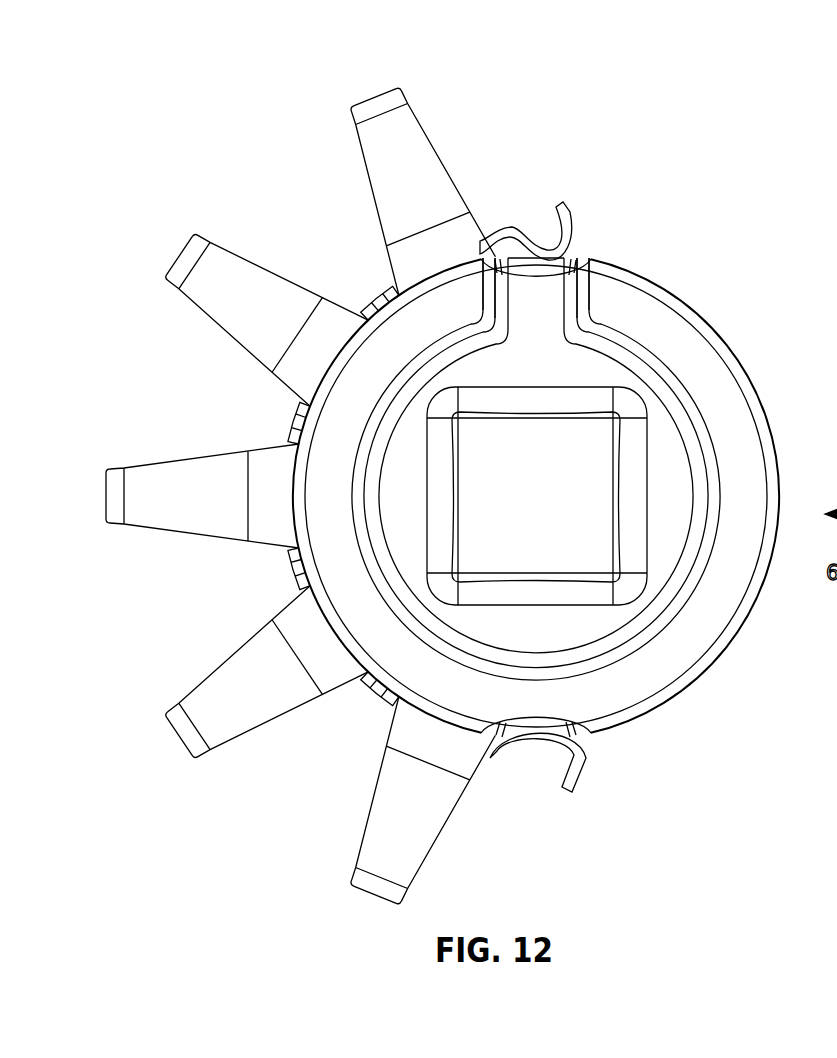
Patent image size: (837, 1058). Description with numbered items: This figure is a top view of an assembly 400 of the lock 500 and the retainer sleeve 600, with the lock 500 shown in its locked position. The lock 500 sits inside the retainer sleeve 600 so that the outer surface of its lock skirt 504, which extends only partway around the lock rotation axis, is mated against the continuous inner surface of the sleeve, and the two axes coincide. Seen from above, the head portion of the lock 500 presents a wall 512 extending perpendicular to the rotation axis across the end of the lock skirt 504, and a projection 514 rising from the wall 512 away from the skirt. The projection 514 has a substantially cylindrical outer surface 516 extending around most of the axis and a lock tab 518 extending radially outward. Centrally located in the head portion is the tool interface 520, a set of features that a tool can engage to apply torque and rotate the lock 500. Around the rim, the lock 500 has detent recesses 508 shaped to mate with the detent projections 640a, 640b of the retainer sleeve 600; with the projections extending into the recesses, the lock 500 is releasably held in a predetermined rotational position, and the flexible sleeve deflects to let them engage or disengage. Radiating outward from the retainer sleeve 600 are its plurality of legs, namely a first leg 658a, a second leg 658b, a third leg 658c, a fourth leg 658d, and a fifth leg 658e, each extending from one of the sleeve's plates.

The surgical access assembly 400 is at (252, 70).
The lock 500 is at (735, 275).
The lock skirt 504 is at (716, 657).
The detent recesses 508 is at (542, 272).
The wall 512 is at (677, 338).
The projection 514 is at (657, 430).
The substantially cylindrical outer surface 516 is at (695, 567).
The lock tab 518 is at (565, 312).
The tool interface 520 is at (585, 545).
The retainer sleeve 600 is at (246, 206).
The detent projection 640a is at (575, 770).
The detent projection 640b is at (582, 212).
The first leg 658a is at (408, 872).
The second leg 658b is at (242, 718).
The third leg 658c is at (185, 525).
The fourth leg 658d is at (217, 300).
The fifth leg 658e is at (372, 172).